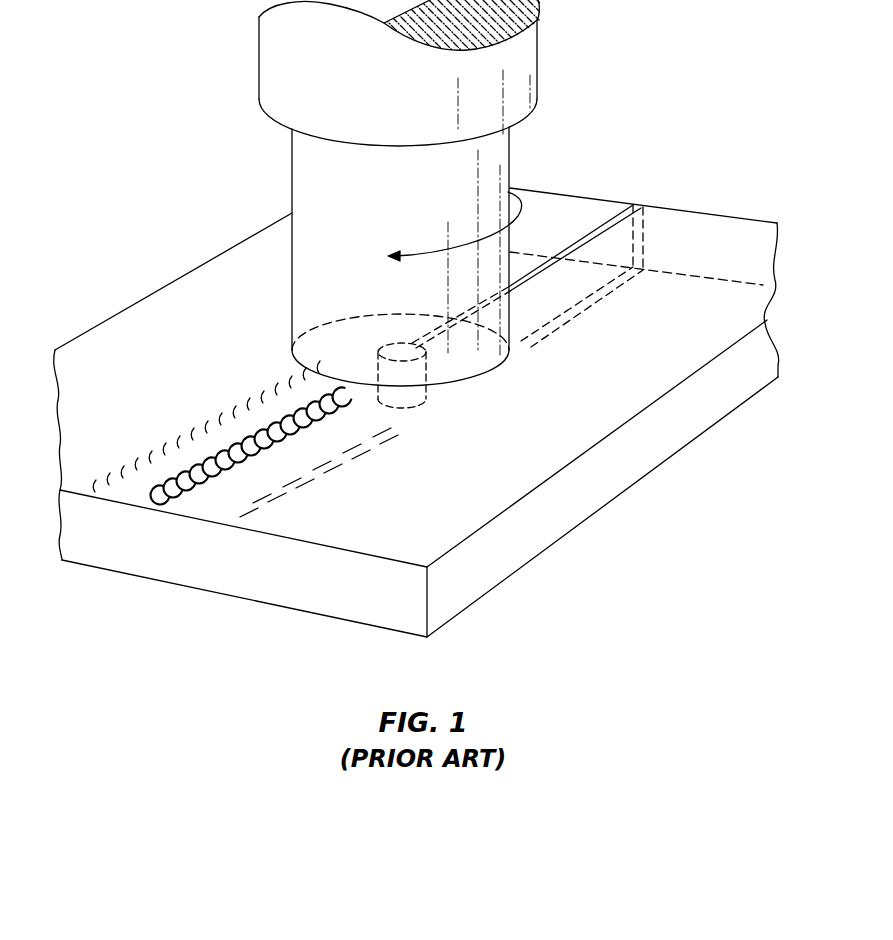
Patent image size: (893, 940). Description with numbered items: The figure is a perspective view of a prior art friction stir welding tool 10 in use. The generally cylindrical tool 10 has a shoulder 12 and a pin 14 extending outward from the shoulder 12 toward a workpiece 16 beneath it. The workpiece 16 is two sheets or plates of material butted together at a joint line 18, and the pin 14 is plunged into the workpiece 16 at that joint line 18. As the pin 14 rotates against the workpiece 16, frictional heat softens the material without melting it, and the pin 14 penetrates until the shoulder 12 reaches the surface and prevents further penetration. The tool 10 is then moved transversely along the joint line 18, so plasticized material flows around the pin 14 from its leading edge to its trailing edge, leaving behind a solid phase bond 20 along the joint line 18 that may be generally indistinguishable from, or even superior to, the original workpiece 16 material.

The tool 10 is at (510, 170).
The shoulder 12 is at (489, 350).
The pin 14 is at (445, 383).
The workpiece 16 is at (708, 233).
The joint line 18 is at (637, 205).
The solid phase bond 20 is at (297, 373).